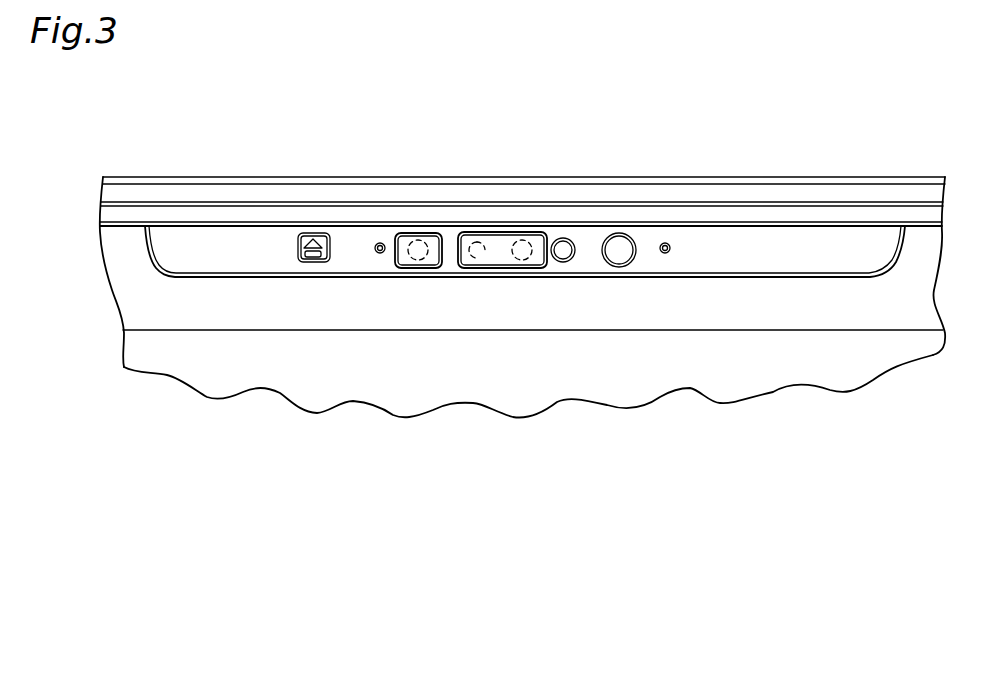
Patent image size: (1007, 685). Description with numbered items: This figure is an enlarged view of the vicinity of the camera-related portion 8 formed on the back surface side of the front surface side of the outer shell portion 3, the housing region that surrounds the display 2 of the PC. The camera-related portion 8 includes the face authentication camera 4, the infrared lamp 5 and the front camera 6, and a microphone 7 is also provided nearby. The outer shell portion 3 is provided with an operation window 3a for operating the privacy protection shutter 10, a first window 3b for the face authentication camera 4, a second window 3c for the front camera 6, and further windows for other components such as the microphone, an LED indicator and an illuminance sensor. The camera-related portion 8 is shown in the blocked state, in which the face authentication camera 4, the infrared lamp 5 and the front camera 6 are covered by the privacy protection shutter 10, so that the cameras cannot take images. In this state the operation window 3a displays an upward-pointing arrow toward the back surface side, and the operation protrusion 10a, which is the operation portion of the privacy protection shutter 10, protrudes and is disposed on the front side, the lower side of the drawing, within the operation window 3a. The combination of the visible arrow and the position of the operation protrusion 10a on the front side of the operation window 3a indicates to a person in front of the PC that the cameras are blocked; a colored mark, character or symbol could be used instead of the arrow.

The display 2 is at (518, 387).
The outer shell portion 3 is at (860, 240).
The operation window 3a is at (302, 236).
The first window 3b is at (420, 232).
The second window 3c is at (543, 232).
The face authentication camera 4 is at (430, 227).
The infrared (IR) lamp 5 is at (480, 228).
The front camera 6 is at (523, 230).
The microphone 7 is at (380, 243).
The camera-related portion 8 is at (490, 164).
The privacy protection shutter 10 is at (318, 235).
The operation protrusion 10a is at (313, 262).